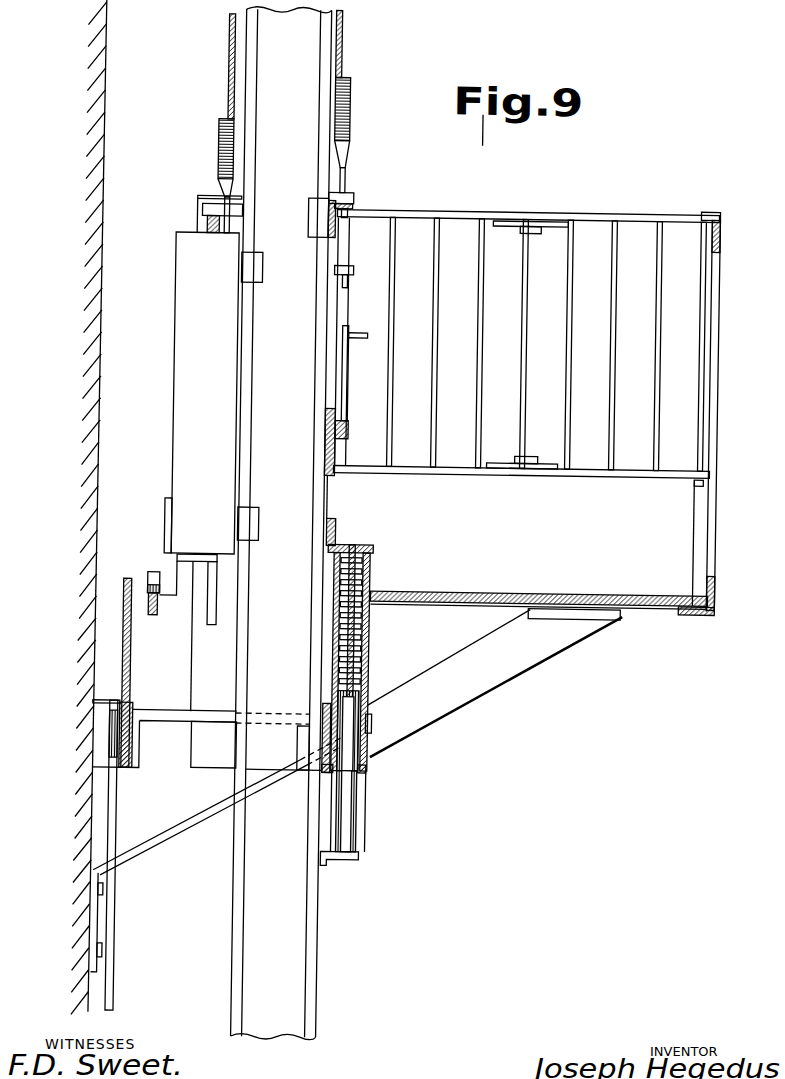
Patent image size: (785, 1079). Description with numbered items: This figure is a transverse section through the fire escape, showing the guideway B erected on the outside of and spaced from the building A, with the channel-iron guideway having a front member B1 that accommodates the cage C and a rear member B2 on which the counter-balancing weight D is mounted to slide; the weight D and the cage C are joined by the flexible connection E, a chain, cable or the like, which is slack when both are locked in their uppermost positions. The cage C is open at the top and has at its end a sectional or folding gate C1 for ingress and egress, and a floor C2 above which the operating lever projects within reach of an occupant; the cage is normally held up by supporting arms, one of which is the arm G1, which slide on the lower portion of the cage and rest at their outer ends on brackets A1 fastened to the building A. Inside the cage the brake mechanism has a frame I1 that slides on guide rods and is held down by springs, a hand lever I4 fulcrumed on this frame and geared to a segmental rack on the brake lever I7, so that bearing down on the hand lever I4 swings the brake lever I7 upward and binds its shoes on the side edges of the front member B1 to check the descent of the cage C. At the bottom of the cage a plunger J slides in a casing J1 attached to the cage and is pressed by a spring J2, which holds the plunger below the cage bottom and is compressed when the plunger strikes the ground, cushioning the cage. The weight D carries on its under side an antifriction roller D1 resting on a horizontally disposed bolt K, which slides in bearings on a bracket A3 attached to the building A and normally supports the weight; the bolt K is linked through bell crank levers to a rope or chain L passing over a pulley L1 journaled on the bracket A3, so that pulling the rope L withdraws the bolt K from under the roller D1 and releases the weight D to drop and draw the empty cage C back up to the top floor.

The building A is at (66, 507).
The brackets A1 is at (208, 740).
The bracket A3 is at (143, 678).
The guideway B is at (281, 542).
The front member of the guideway B1 is at (316, 97).
The rear member of the guideway B2 is at (250, 140).
The cage C is at (526, 400).
The sectional or folding gate C1 is at (467, 228).
The floor of the cage C2 is at (521, 594).
The counter-balancing weight D is at (178, 408).
The antifriction roller D1 is at (156, 574).
The flexible connection E is at (222, 72).
The supporting arm G1 is at (322, 706).
The frame I1 is at (339, 444).
The hand lever I4 is at (346, 363).
The brake lever I7 is at (324, 440).
The plunger J is at (358, 705).
The casing J1 is at (358, 656).
The spring J2 is at (365, 628).
The bolt K is at (159, 612).
The rope or chain L is at (121, 828).
The pulley L1 is at (112, 721).